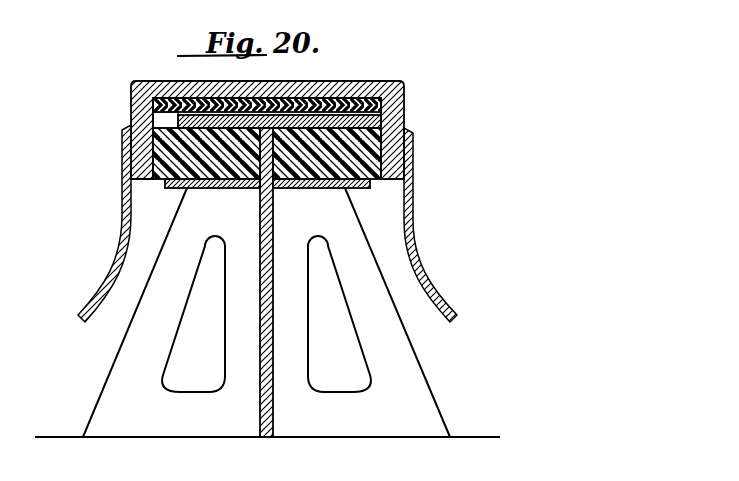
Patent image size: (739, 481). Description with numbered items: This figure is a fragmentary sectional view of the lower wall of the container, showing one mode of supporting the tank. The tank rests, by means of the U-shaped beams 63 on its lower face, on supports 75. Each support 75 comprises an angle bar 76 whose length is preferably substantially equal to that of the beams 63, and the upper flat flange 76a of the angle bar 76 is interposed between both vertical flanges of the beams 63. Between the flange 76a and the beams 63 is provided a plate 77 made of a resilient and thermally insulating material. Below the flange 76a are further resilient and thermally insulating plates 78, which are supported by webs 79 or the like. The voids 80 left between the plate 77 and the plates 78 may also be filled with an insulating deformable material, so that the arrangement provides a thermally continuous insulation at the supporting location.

The U-shaped beam 63 is at (372, 84).
The plate 77 is at (333, 93).
The upper flat flange 76a is at (350, 122).
The void 80 is at (168, 121).
The resilient and thermally insulating plate 78 is at (170, 152).
The web 79 is at (283, 191).
The angle bar 76 is at (267, 309).
The support 75 is at (432, 373).